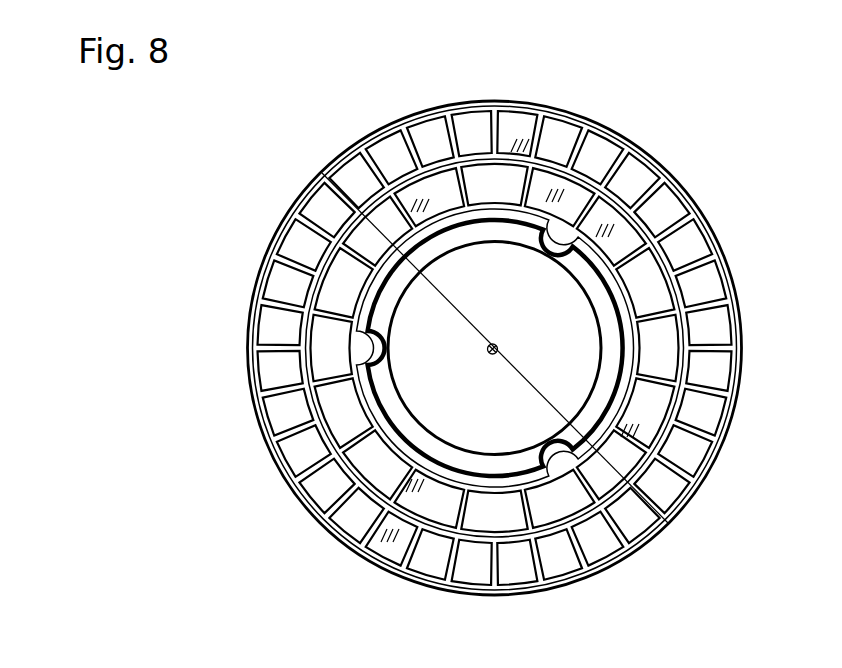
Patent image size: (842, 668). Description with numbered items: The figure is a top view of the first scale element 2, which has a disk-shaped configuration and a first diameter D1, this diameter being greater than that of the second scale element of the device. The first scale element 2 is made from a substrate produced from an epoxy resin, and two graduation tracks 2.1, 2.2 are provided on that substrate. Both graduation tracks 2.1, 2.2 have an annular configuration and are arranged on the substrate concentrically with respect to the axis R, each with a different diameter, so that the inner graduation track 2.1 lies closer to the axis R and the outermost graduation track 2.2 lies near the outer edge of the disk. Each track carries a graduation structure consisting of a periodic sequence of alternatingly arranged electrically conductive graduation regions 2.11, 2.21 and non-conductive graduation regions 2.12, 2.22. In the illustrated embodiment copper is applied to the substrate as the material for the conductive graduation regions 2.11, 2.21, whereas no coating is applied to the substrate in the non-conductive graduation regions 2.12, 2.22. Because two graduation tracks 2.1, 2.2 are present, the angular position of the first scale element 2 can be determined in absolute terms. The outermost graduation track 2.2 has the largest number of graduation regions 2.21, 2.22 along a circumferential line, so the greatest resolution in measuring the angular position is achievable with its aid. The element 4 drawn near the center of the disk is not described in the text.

The first scale element 2 is at (478, 348).
The graduation track 2.1 is at (494, 348).
The electrically conductive graduation region 2.11 is at (360, 410).
The non-conductive graduation region 2.12 is at (398, 442).
The graduation track 2.2 is at (283, 288).
The electrically conductive graduation region 2.21 is at (298, 490).
The non-conductive graduation region 2.22 is at (312, 524).
The hub 4 is at (372, 318).
The first diameter D1 is at (697, 552).
The axis R is at (488, 349).